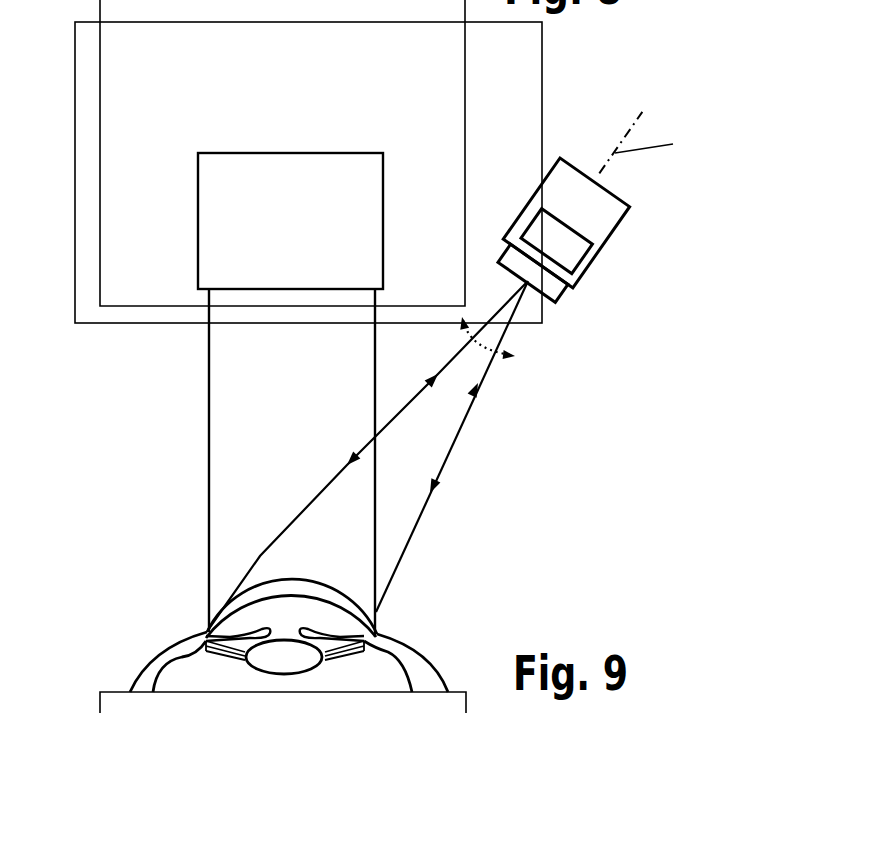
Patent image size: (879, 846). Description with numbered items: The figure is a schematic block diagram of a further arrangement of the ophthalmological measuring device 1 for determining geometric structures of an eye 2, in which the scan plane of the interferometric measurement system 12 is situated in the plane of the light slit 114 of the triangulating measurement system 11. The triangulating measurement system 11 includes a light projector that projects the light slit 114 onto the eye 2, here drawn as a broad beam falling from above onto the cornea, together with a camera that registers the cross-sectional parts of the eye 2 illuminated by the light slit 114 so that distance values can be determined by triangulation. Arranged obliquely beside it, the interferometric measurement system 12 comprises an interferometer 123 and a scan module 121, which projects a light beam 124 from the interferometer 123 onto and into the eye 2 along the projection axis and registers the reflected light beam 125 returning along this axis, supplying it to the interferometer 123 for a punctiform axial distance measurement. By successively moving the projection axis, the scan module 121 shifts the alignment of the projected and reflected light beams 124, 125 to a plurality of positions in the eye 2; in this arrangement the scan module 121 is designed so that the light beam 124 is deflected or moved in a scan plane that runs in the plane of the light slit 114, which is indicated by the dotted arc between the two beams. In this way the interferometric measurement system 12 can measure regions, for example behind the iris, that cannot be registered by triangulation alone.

The ophthalmological measuring device 1 is at (84, 361).
The eye 2 is at (126, 668).
The triangulating measurement system 11 is at (207, 232).
The interferometric measurement system 12 is at (621, 217).
The light slit 114 is at (227, 445).
The scan module 121 is at (552, 286).
The interferometer 123 is at (573, 254).
The light beam 124 is at (443, 468).
The light beam 125 is at (470, 413).